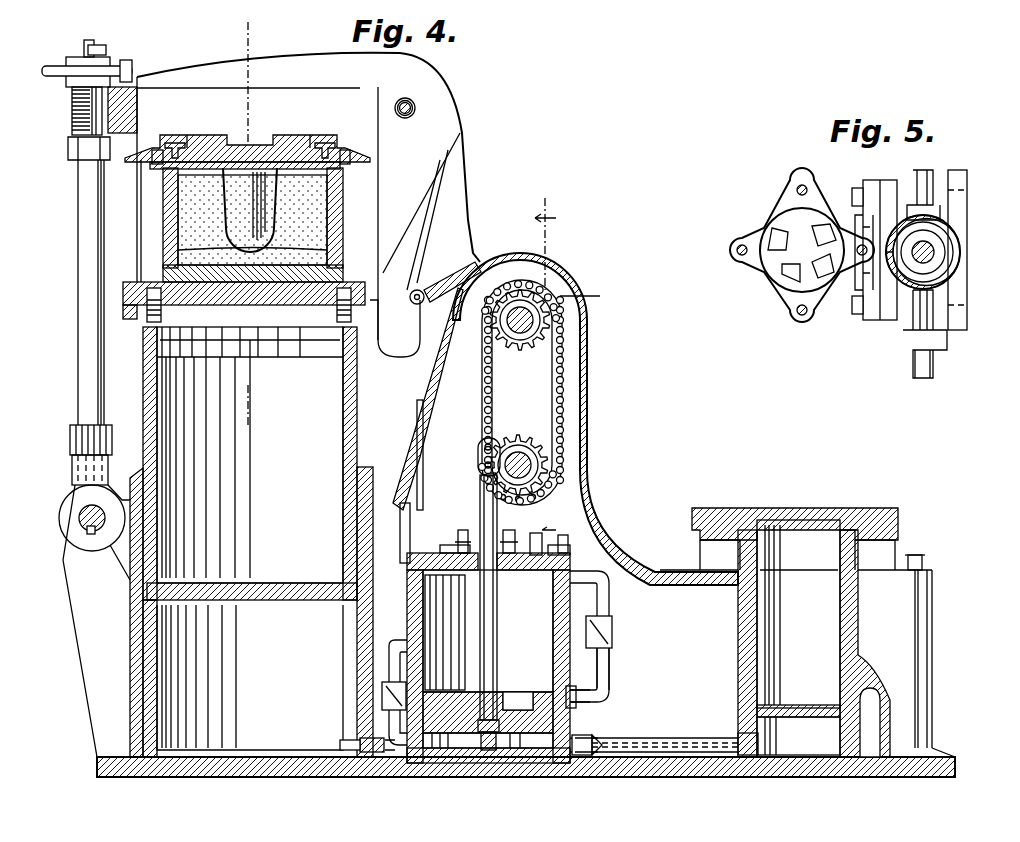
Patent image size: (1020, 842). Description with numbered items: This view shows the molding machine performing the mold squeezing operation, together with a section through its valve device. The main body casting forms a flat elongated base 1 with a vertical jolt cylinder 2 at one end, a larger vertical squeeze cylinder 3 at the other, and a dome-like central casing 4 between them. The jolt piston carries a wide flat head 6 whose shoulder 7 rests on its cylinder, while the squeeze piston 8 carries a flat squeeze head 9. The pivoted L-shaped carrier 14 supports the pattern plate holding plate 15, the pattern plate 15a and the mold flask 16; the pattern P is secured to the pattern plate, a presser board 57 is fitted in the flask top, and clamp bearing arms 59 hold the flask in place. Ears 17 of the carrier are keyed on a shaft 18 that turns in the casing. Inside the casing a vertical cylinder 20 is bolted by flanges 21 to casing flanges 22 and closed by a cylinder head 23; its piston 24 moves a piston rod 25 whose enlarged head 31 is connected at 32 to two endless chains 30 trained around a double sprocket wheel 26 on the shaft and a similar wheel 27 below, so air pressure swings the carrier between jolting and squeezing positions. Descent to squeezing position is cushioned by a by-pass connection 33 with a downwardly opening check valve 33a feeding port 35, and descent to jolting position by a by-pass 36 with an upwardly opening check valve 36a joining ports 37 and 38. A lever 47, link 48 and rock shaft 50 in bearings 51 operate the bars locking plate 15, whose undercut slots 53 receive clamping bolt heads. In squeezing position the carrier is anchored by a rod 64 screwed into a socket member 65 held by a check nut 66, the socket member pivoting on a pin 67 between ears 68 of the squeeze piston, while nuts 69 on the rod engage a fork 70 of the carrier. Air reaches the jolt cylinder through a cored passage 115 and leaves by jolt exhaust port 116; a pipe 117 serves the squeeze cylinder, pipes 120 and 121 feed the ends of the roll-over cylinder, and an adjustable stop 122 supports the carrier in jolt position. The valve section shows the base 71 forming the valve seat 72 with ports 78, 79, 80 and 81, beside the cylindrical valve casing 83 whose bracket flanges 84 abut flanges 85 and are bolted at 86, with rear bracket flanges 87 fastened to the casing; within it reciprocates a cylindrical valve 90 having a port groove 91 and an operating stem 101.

In FIG. 4, the base 1 is at (97, 765).
In FIG. 4, the jolt cylinder 2 is at (858, 604).
In FIG. 4, the squeeze cylinder 3 is at (130, 648).
In FIG. 4, the central casing 4 is at (602, 296).
In FIG. 4, the jolt head 6 is at (784, 506).
In FIG. 4, the shoulder 7 is at (848, 530).
In FIG. 4, the squeeze piston 8 is at (143, 385).
In FIG. 4, the squeeze head 9 is at (135, 282).
In FIG. 4, the carrier 14 is at (445, 93).
In FIG. 4, the pattern plate holding plate 15 is at (137, 162).
In FIG. 4, the pattern plate 15a is at (160, 169).
In FIG. 4, the mold flask 16 is at (163, 215).
In FIG. 4, the ears 17 is at (472, 262).
In FIG. 4, the shaft 18 is at (575, 285).
In FIG. 4, the roll-over cylinder 20 is at (612, 600).
In FIG. 4, the cylinder flanges 21 is at (405, 760).
In FIG. 4, the casing flanges 22 is at (612, 694).
In FIG. 4, the cylinder head 23 is at (425, 553).
In FIG. 4, the piston 24 is at (524, 692).
In FIG. 4, the piston rod 25 is at (478, 496).
In FIG. 4, the double sprocket wheel 26 is at (545, 330).
In FIG. 4, the sprocket wheel 27 is at (540, 468).
In FIG. 4, the endless chains 30 is at (565, 365).
In FIG. 4, the enlarged head 31 is at (476, 458).
In FIG. 4, the operative connection 32 is at (484, 466).
In FIG. 4, the by-pass connection 33 is at (392, 648).
In FIG. 4, the check valve 33a is at (382, 688).
In FIG. 4, the cylinder port 35 is at (440, 748).
In FIG. 4, the by-pass 36 is at (618, 665).
In FIG. 4, the check valve 36a is at (614, 630).
In FIG. 4, the cylinder port 37 is at (576, 700).
In FIG. 4, the cylinder port 38 is at (570, 560).
In FIG. 4, the lever 47 is at (418, 304).
In FIG. 4, the link 48 is at (448, 218).
In FIG. 4, the rock shaft 50 is at (404, 98).
In FIG. 4, the bearings 51 is at (412, 114).
In FIG. 4, the undercut slots 53 is at (175, 143).
In FIG. 4, the presser board 57 is at (190, 250).
In FIG. 4, the clamp bearing arms 59 is at (383, 350).
In FIG. 4, the rod 64 is at (78, 305).
In FIG. 4, the socket member 65 is at (72, 462).
In FIG. 4, the check nut 66 is at (70, 438).
In FIG. 4, the pin 67 is at (79, 520).
In FIG. 4, the ears 68 is at (63, 560).
In FIG. 4, the nuts 69 is at (108, 62).
In FIG. 4, the fork 70 is at (72, 104).
In FIG. 5, the valve casing base 71 is at (752, 232).
In FIG. 5, the valve seat 72 is at (776, 270).
In FIG. 5, the jolt port 78 is at (776, 232).
In FIG. 5, the inlet port 79 is at (792, 272).
In FIG. 5, the squeeze exhaust port 80 is at (820, 232).
In FIG. 5, the squeeze port 81 is at (822, 272).
In FIG. 5, the valve casing 83 is at (958, 258).
In FIG. 5, the bracket flanges 84 is at (888, 182).
In FIG. 5, the flanges 85 is at (870, 180).
In FIG. 5, the bolts 86 is at (857, 314).
In FIG. 5, the bracket flanges 87 is at (967, 200).
In FIG. 5, the cylindrical valve 90 is at (942, 240).
In FIG. 5, the port groove 91 is at (950, 280).
In FIG. 5, the operating stem 101 is at (935, 250).
In FIG. 4, the cored passage 115 is at (700, 745).
In FIG. 4, the jolt exhaust port 116 is at (742, 735).
In FIG. 4, the pipe 117 is at (365, 740).
In FIG. 4, the pipe 120 is at (520, 570).
In FIG. 4, the pipe 121 is at (598, 755).
In FIG. 4, the adjustable stop 122 is at (920, 555).
In FIG. 4, the pattern P is at (250, 210).